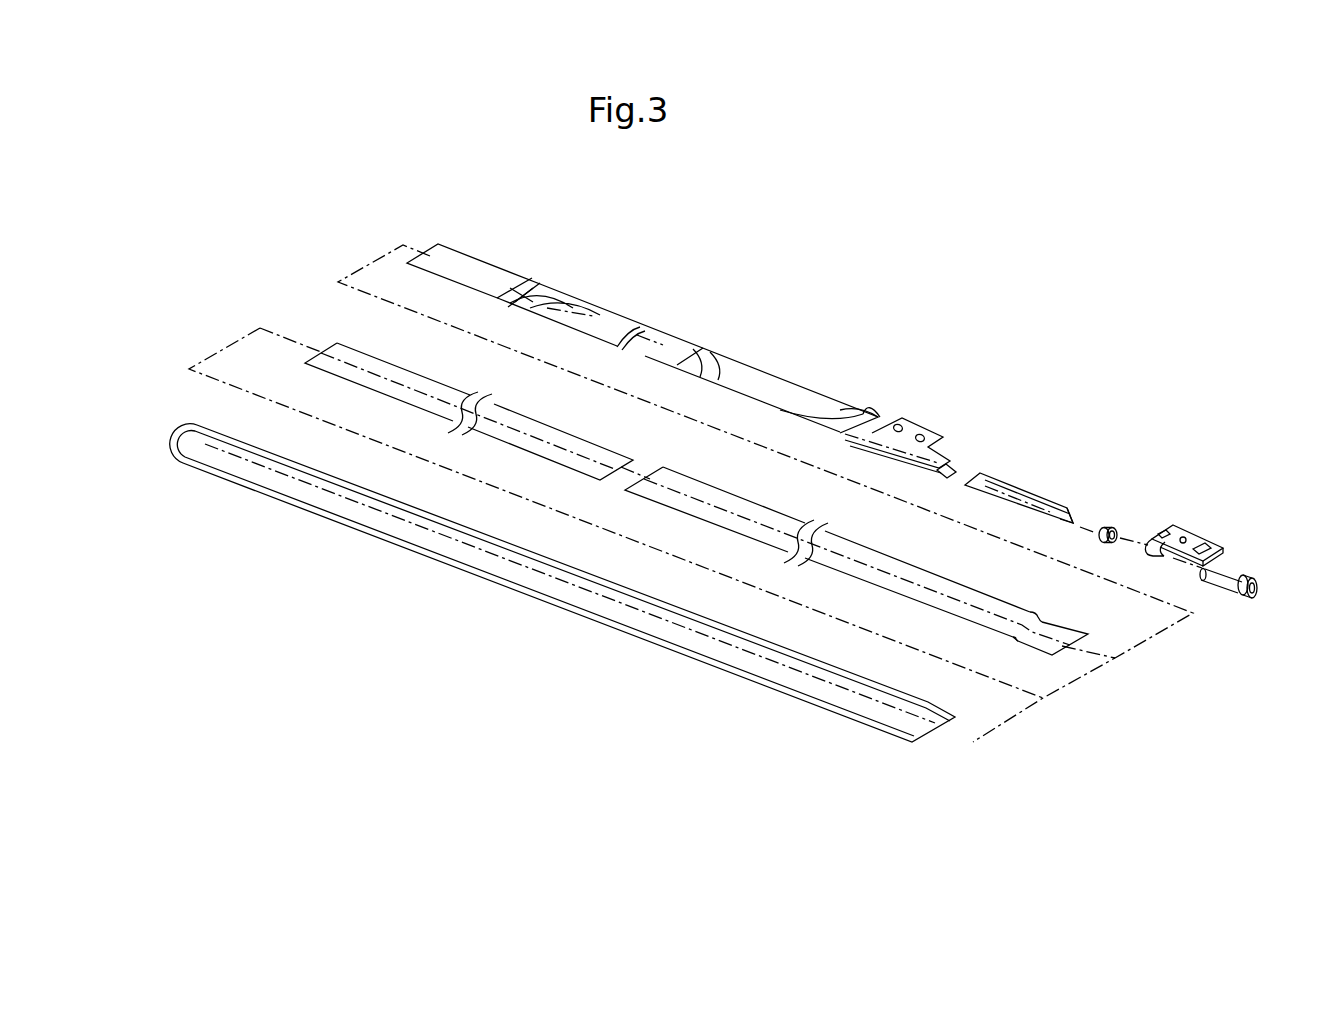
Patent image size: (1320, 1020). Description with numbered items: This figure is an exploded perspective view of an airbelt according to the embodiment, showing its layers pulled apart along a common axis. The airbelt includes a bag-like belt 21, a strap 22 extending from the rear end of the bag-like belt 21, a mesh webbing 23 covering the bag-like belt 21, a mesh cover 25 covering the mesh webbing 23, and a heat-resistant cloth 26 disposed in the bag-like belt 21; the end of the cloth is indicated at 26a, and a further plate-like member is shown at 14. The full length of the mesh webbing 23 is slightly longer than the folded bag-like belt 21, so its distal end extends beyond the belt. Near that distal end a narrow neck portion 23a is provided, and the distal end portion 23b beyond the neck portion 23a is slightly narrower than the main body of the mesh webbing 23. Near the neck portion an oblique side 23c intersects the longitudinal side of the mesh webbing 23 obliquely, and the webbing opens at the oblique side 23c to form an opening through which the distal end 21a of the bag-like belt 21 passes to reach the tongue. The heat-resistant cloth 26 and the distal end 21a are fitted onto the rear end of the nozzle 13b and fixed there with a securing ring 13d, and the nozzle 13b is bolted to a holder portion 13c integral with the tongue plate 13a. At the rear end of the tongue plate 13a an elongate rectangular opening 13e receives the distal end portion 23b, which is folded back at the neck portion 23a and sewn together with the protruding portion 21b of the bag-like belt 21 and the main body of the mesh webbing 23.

The tongue plate 13a is at (1196, 537).
The nozzle 13b is at (1220, 590).
The holder portion 13c is at (1150, 556).
The securing ring 13d is at (1108, 527).
The elongate rectangular opening 13e is at (1164, 528).
The plate member 14 is at (415, 371).
The bag-like belt 21 is at (763, 369).
The distal end of the bag-like belt 21a is at (958, 466).
The protruding portion of the bag-like belt 21b is at (918, 424).
The strap 22 is at (497, 266).
The mesh webbing 23 is at (857, 544).
The neck portion 23a is at (1012, 640).
The distal end portion of the mesh webbing 23b is at (1068, 630).
The oblique side 23c is at (1003, 634).
The mesh cover 25 is at (505, 586).
The heat-resistant cloth 26 is at (1045, 495).
The end portion of support strip 26a is at (1066, 526).